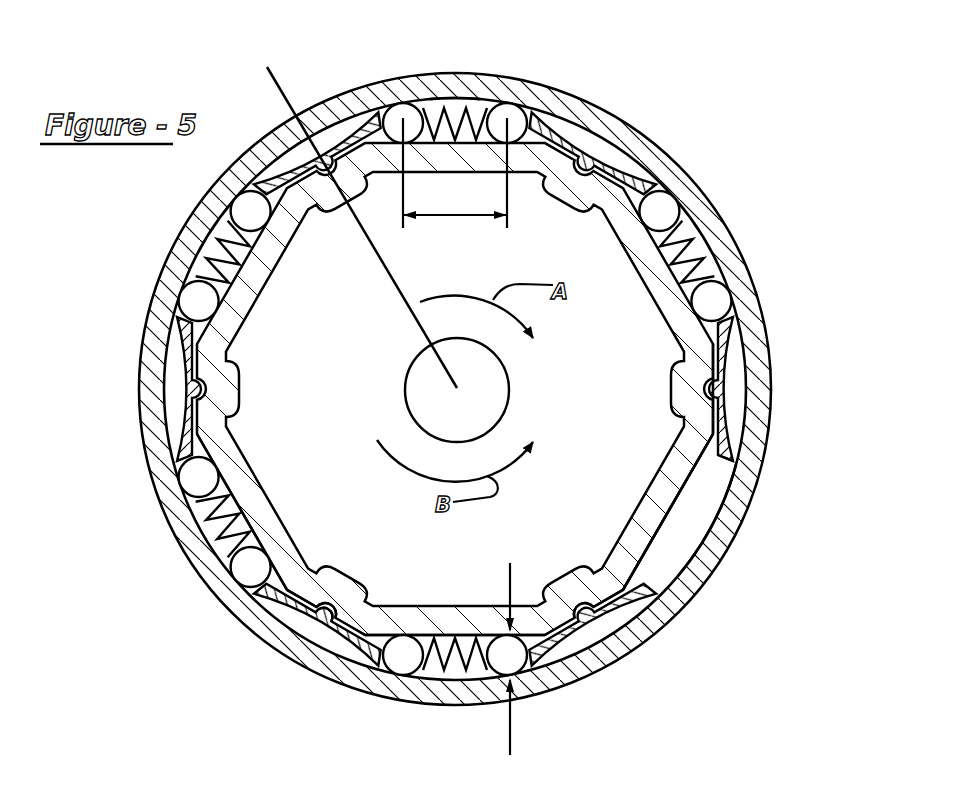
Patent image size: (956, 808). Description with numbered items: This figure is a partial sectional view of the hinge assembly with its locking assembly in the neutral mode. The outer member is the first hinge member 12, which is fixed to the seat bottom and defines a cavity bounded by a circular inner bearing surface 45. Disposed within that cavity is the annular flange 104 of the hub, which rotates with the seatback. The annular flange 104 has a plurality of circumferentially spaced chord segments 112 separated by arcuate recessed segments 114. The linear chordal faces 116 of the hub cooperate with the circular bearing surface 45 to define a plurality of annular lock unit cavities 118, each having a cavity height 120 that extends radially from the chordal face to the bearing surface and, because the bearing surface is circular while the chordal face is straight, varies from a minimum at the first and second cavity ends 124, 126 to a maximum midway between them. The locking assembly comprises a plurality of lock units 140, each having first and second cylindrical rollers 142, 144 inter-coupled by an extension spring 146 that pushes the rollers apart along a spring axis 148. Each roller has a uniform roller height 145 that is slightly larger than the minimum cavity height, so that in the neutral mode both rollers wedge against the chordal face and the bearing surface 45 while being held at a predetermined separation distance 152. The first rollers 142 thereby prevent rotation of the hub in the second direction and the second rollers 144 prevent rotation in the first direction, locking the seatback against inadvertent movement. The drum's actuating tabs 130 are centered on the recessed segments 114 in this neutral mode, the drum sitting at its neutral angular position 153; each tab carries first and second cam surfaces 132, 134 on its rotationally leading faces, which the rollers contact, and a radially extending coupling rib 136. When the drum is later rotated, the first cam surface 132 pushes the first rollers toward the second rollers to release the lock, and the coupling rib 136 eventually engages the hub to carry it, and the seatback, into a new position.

The first hinge member 12 is at (689, 160).
The bearing surface 45 is at (720, 515).
The annular flange 104 is at (253, 280).
The chord segments 112 is at (660, 500).
The arcuate recessed segments 114 is at (573, 580).
The chordal faces 116 is at (690, 490).
The lock unit cavities 118 is at (687, 527).
The cavity height 120 is at (722, 473).
The first cavity end 124 is at (712, 458).
The second cavity end 126 is at (660, 573).
The actuating tabs 130 is at (327, 608).
The first cam surface 132 is at (272, 597).
The second cam surface 134 is at (385, 652).
The coupling rib 136 is at (330, 615).
The lock units 140 is at (433, 100).
The first cylindrical roller 142 is at (398, 112).
The second cylindrical roller 144 is at (565, 128).
The roller height 145 is at (512, 717).
The extension spring 146 is at (452, 125).
The spring axis 148 is at (520, 110).
The separation distance 152 is at (455, 215).
The neutral angular position 153 is at (388, 278).